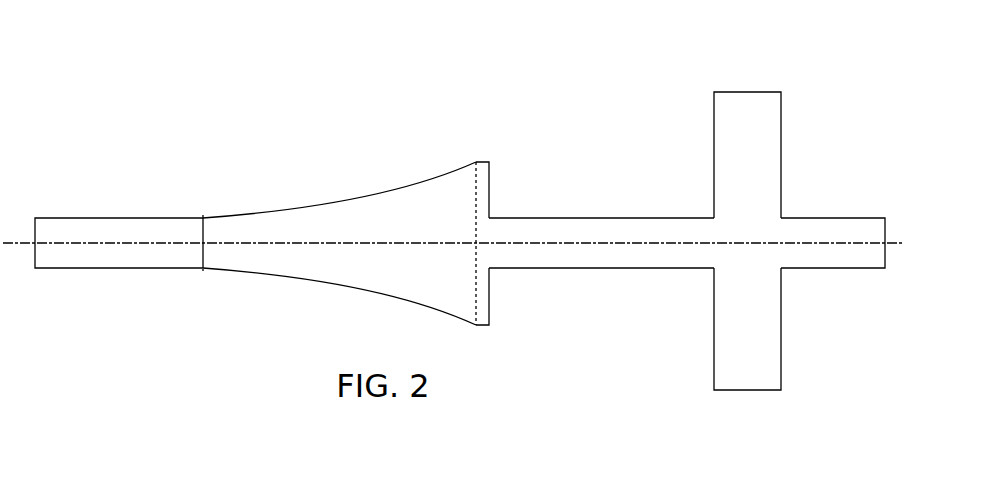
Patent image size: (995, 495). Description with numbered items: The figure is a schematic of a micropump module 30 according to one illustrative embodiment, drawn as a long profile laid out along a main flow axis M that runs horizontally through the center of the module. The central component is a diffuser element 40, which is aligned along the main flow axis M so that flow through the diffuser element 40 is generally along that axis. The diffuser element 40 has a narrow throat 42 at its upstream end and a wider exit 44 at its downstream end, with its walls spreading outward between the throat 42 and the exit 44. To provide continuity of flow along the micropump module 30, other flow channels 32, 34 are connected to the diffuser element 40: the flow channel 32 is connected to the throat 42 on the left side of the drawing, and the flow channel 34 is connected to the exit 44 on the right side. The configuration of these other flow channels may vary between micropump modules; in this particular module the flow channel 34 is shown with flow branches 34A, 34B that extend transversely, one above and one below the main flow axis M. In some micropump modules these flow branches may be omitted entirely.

The micropump module 30 is at (460, 79).
The flow channel 32 is at (143, 268).
The flow channel 34 is at (577, 268).
The flow branch 34A is at (748, 110).
The flow branch 34B is at (743, 380).
The diffuser element 40 is at (340, 218).
The throat 42 is at (203, 218).
The exit 44 is at (471, 186).
The main flow axis M is at (162, 242).